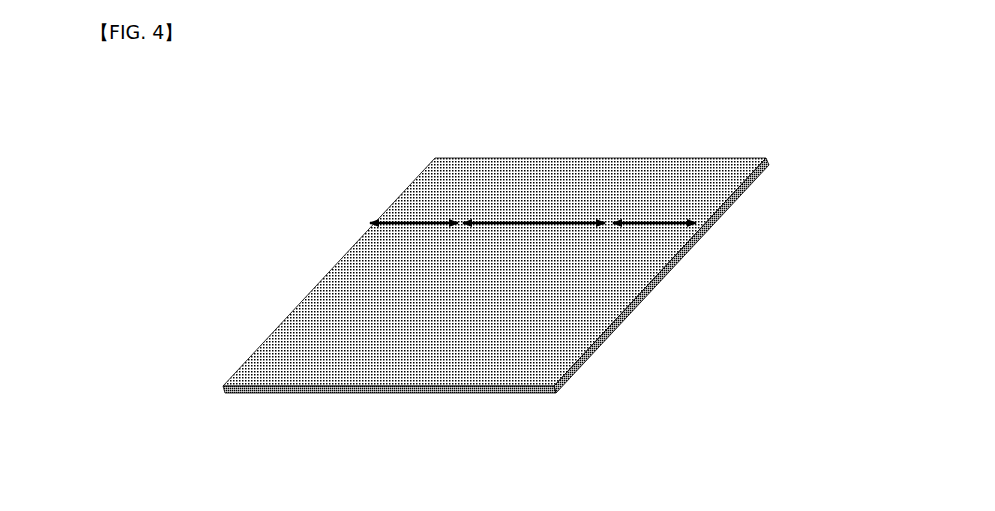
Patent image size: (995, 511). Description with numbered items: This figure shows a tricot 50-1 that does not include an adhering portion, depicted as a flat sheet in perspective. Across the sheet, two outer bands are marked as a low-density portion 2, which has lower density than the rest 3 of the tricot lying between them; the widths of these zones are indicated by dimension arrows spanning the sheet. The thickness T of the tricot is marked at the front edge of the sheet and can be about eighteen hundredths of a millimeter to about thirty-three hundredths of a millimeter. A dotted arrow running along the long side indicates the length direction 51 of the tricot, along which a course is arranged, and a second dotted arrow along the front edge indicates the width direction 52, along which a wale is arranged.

The tricot 50-1 is at (262, 108).
The low-density portion 2 is at (420, 184).
The rest 3 is at (540, 181).
The length direction 51 is at (603, 378).
The width direction 52 is at (553, 418).
The thickness T is at (201, 358).